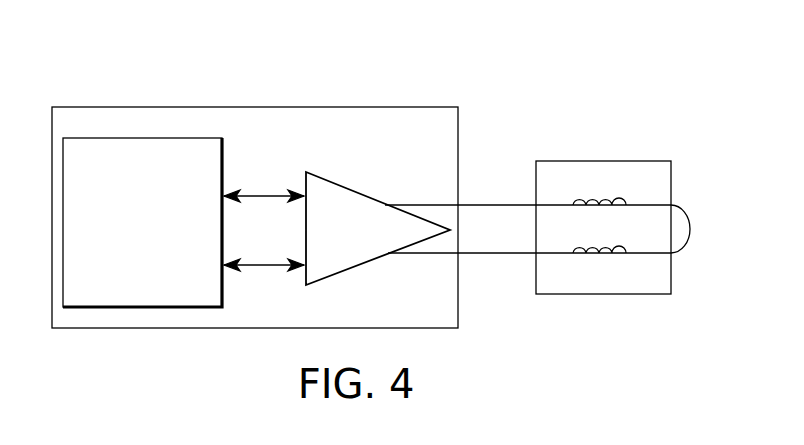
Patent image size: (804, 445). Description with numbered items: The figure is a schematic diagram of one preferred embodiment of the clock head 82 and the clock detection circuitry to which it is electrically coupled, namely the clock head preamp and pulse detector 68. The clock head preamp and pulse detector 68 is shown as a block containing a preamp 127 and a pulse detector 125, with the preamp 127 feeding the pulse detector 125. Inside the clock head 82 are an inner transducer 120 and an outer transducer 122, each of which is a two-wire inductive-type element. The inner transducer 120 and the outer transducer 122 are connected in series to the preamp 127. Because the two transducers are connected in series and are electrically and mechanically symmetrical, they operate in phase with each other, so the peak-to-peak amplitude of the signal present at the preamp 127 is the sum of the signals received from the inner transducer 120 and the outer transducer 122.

The clock head preamp and pulse detector 68 is at (168, 107).
The pulse detector 125 is at (128, 138).
The preamp 127 is at (333, 181).
The clock head 82 is at (564, 161).
The inner transducer 120 is at (612, 183).
The outer transducer 122 is at (617, 272).